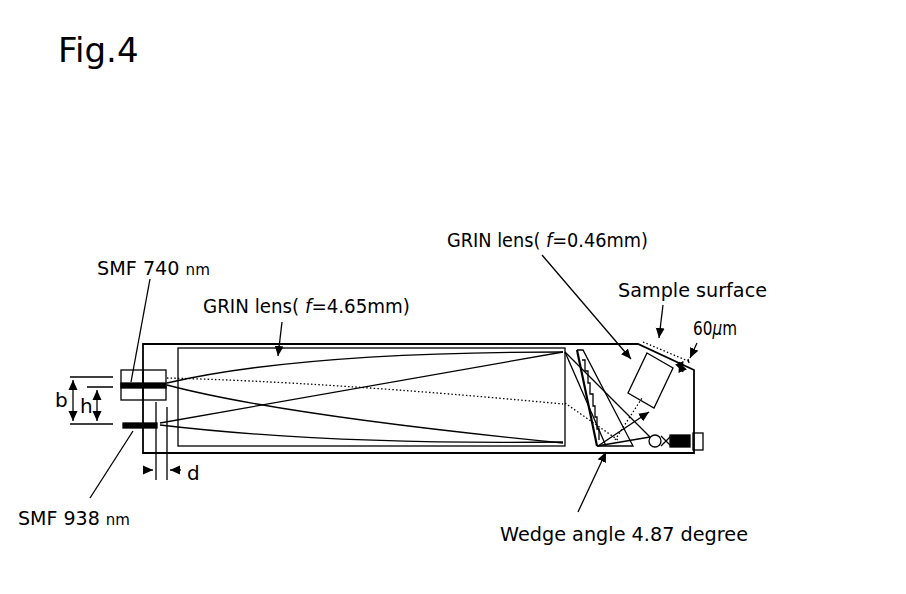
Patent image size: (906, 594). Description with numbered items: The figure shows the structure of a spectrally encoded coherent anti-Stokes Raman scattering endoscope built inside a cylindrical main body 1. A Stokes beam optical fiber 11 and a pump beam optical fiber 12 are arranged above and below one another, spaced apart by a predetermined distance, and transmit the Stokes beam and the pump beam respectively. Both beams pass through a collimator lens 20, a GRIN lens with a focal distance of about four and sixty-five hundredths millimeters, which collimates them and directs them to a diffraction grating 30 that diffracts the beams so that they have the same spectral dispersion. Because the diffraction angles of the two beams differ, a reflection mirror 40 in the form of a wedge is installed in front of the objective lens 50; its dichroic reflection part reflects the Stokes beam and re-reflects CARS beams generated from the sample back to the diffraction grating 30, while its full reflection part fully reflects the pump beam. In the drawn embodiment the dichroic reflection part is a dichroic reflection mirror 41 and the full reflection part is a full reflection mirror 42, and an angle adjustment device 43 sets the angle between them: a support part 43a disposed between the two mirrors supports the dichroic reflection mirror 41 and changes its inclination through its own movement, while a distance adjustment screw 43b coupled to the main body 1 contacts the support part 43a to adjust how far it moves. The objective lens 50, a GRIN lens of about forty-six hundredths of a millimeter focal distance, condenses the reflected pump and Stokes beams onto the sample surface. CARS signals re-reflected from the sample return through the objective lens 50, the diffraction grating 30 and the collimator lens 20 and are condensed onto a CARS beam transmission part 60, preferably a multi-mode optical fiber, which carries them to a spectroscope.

The cylindrical main body 1 is at (268, 460).
The Stokes beam optical fiber 11 is at (120, 378).
The pump beam optical fiber 12 is at (115, 429).
The collimator lens 20 is at (370, 453).
The diffraction grating 30 is at (566, 342).
The reflection mirror 40 is at (669, 416).
The dichroic reflection mirror 41 is at (661, 432).
The full reflection mirror 42 is at (648, 450).
The angle adjustment device 43 is at (742, 453).
The support part 43a is at (680, 451).
The distance adjustment screw 43b is at (703, 442).
The objective lens 50 is at (675, 392).
The CARS beam transmission part 60 is at (118, 360).